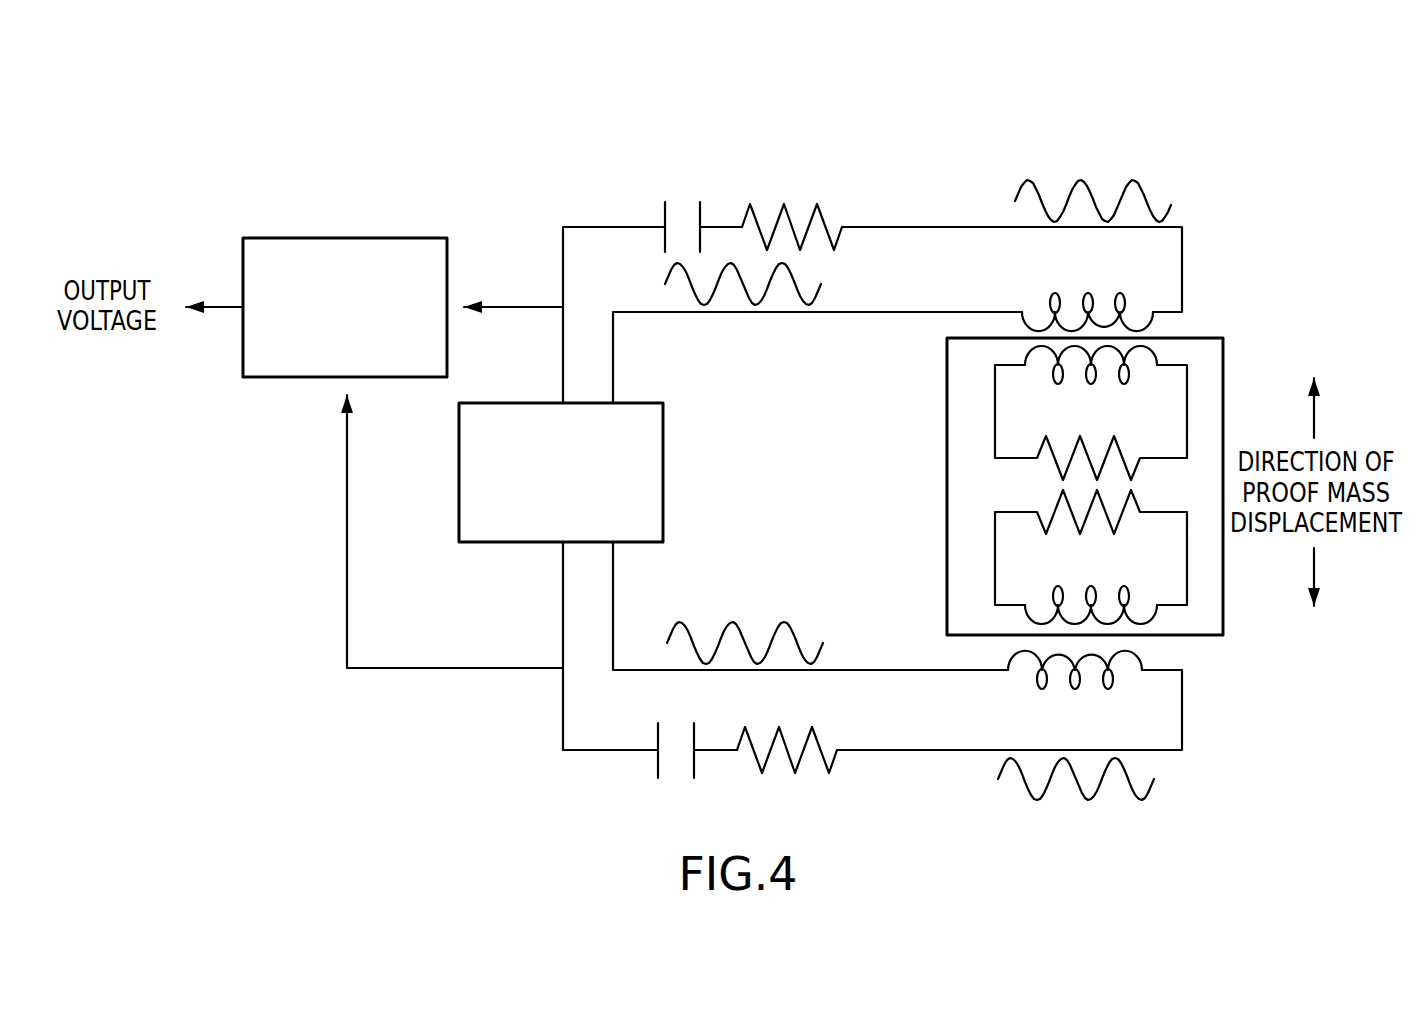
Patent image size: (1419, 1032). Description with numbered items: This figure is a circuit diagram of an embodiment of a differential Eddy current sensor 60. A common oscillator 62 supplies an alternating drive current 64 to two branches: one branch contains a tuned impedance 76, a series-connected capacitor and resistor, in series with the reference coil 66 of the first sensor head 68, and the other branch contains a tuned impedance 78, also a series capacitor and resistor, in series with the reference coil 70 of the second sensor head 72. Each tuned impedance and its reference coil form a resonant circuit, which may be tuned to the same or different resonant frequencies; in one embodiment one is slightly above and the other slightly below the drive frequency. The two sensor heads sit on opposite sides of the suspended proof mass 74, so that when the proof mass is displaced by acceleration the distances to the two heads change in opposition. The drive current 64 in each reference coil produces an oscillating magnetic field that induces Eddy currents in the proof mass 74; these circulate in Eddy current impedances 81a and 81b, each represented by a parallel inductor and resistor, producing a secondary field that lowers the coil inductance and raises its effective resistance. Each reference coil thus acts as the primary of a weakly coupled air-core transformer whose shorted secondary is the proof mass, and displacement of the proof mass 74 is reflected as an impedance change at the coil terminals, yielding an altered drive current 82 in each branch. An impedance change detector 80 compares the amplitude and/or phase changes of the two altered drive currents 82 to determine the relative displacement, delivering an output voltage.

The differential Eddy current sensor 60 is at (1015, 115).
The common oscillator 62 is at (460, 440).
The alternating drive current 64 is at (667, 282).
The reference coil 66 is at (1024, 310).
The sensor head 1 68 is at (1140, 293).
The reference coil 70 is at (1142, 659).
The sensor head 2 72 is at (1124, 682).
The proof mass 74 is at (1242, 352).
The tuned impedance 76 is at (712, 211).
The tuned impedance 78 is at (712, 767).
The impedance change detector 80 is at (448, 266).
The Eddy current impedance 81a is at (1192, 352).
The Eddy current impedance 81b is at (1200, 605).
The altered drive current 82 is at (1015, 199).